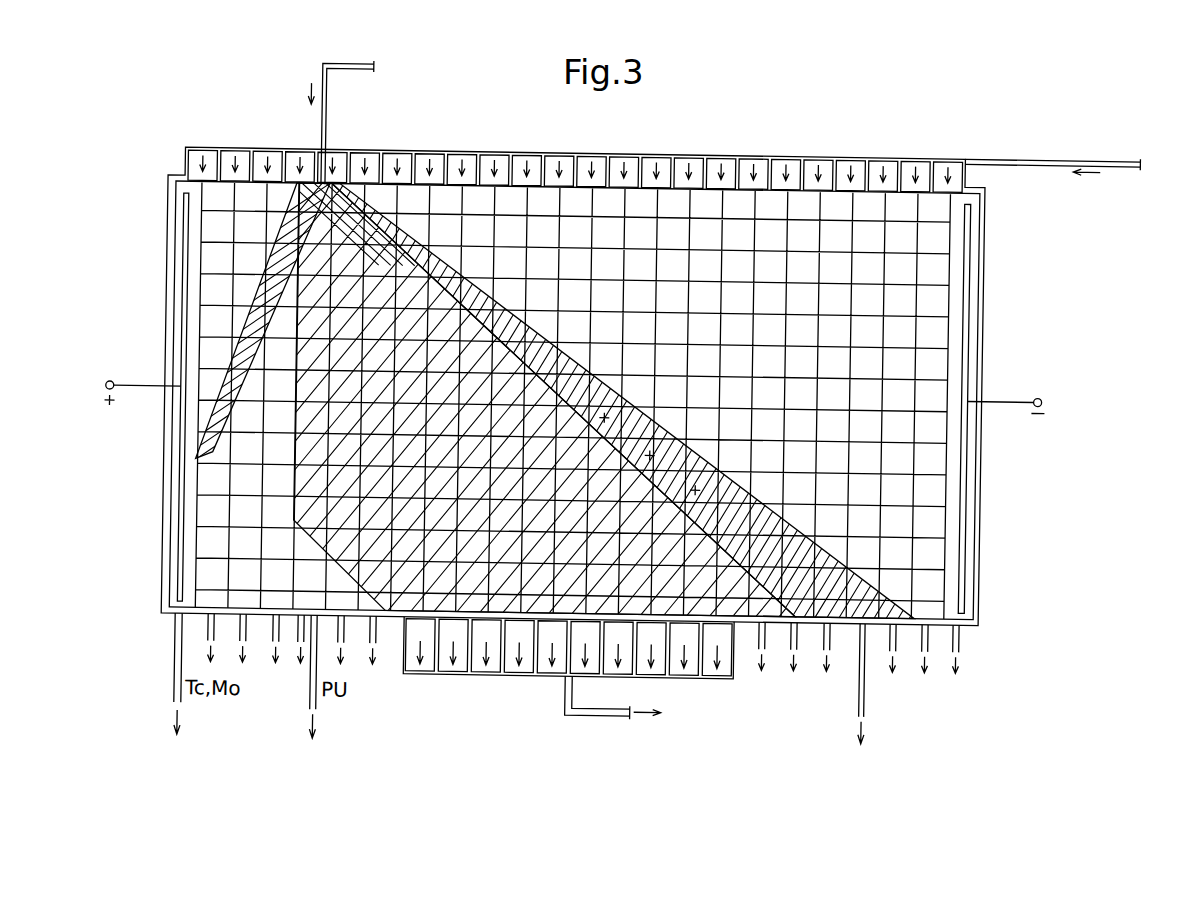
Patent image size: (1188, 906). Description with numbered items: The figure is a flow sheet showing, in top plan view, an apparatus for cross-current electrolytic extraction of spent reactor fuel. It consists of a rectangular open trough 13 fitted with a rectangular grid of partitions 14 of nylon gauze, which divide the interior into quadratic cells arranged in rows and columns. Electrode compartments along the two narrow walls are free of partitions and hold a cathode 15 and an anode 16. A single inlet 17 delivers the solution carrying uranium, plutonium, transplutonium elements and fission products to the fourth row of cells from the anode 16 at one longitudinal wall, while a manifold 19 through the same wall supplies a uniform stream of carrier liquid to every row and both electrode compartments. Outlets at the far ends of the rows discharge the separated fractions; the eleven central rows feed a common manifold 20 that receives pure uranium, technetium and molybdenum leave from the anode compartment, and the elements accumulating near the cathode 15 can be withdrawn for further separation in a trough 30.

The trough 13 is at (985, 243).
The partitions 14 is at (932, 461).
The cathode 15 is at (971, 321).
The anode 16 is at (184, 297).
The inlet 17 is at (325, 104).
The manifold 19 is at (1045, 154).
The common manifold 20 is at (486, 670).
The trough 30 is at (891, 701).